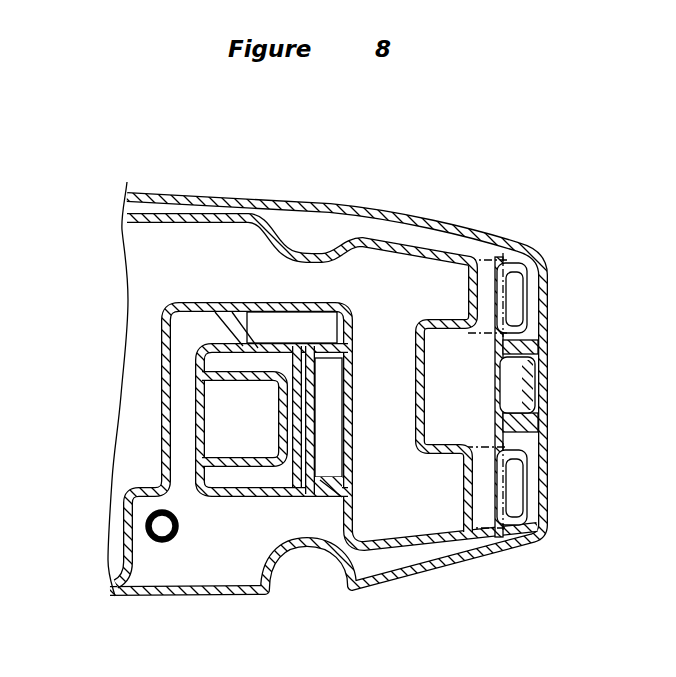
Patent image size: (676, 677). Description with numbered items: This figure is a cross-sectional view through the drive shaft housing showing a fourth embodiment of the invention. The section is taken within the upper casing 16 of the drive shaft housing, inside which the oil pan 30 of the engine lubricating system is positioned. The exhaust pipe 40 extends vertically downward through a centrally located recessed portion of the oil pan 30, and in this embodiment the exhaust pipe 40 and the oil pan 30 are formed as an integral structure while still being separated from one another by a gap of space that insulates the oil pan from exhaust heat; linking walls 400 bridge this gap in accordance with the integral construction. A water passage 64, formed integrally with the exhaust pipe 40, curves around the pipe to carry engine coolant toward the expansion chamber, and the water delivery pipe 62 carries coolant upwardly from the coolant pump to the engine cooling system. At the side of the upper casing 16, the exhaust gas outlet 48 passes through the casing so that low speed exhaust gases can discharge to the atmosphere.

The upper casing 16 is at (478, 234).
The oil pan 30 is at (215, 217).
The exhaust pipe 40 is at (197, 420).
The exhaust gas outlet 48 is at (535, 402).
The water delivery pipe 62 is at (160, 543).
The water passage 64 is at (292, 486).
The linking walls 400 is at (232, 322).